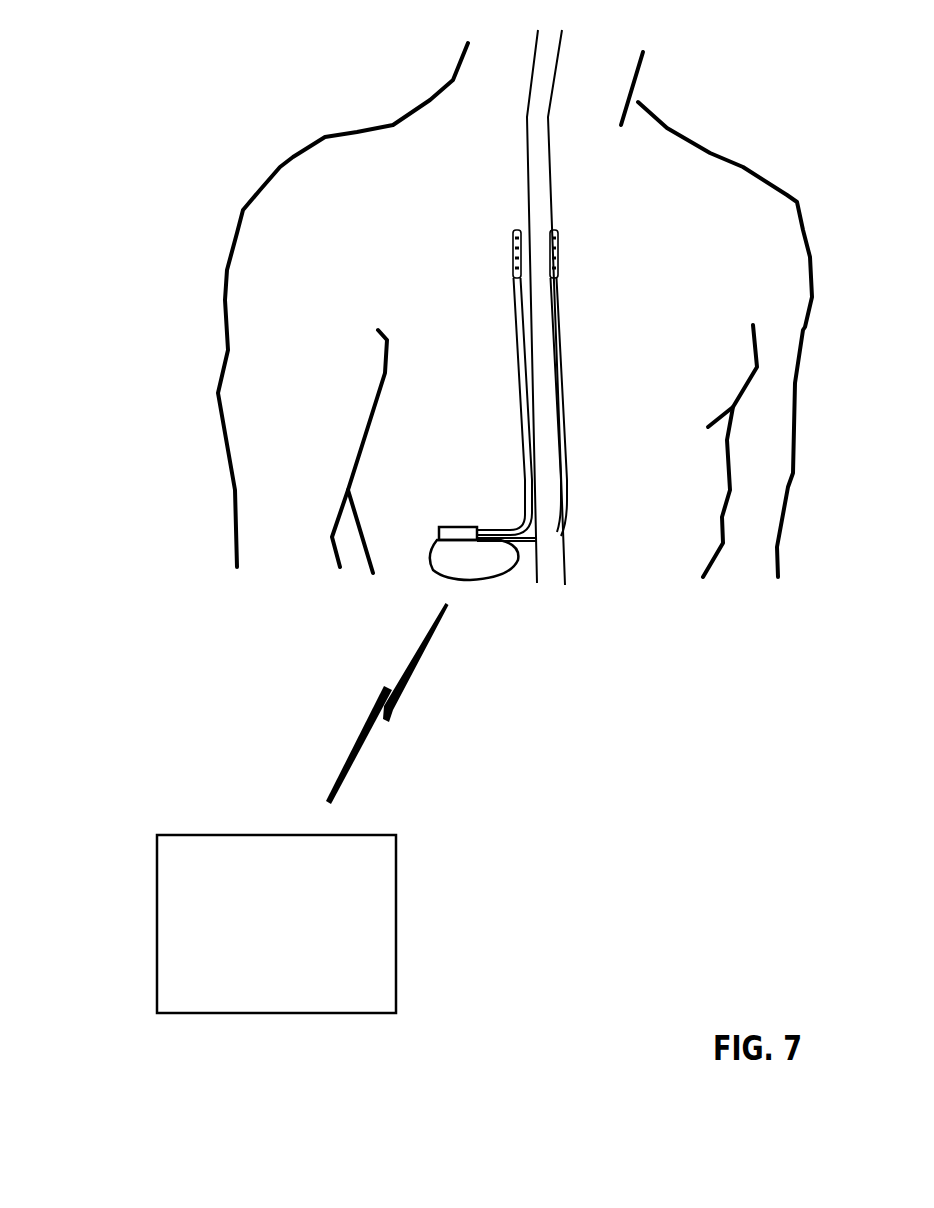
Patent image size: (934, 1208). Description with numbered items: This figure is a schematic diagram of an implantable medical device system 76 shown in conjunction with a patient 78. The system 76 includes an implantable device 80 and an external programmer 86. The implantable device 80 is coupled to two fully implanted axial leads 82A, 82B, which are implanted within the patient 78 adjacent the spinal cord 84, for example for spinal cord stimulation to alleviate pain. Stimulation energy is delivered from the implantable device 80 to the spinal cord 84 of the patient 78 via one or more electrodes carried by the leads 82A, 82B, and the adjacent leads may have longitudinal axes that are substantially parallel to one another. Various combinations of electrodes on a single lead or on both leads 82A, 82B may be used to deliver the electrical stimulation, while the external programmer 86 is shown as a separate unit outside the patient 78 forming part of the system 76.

The system 76 is at (116, 80).
The patient 78 is at (720, 151).
The implantable device 80 is at (446, 524).
The lead 82A is at (514, 267).
The lead 82B is at (555, 290).
The spinal cord 84 is at (549, 140).
The external programmer 86 is at (396, 923).